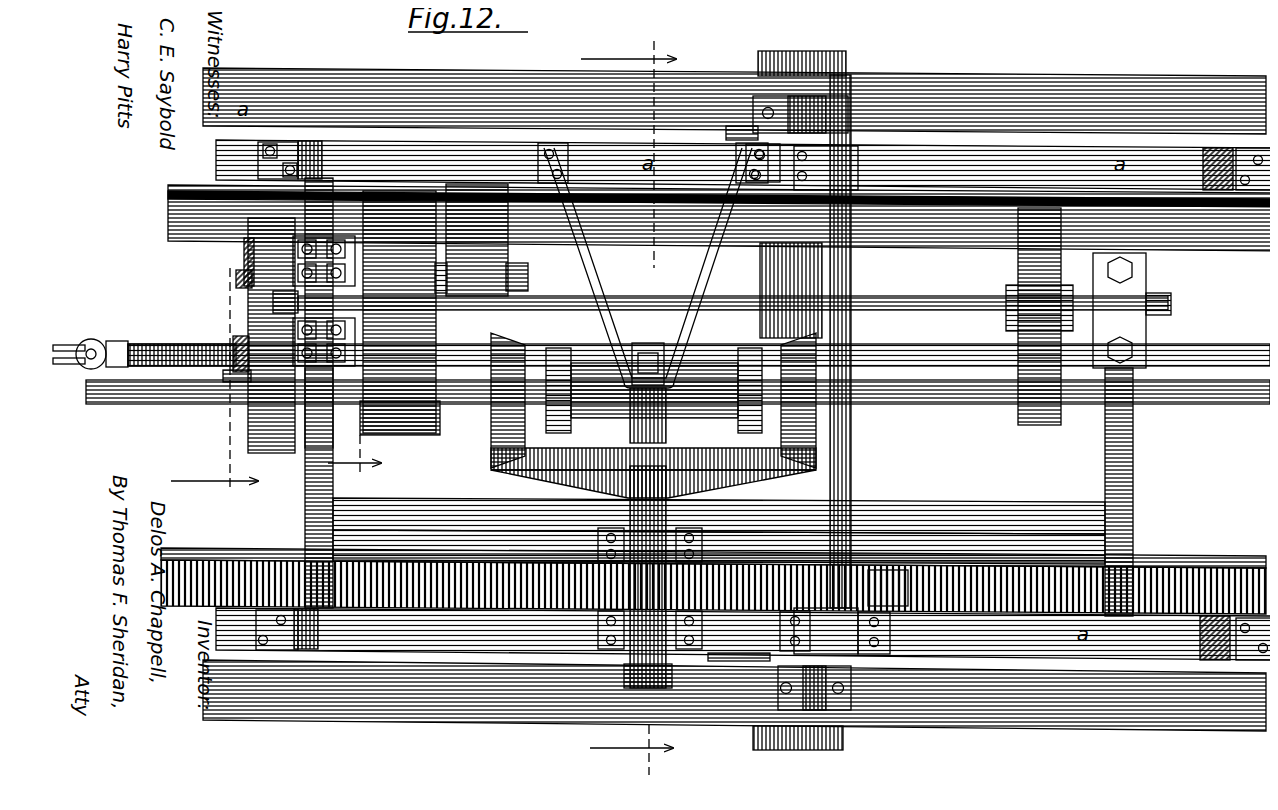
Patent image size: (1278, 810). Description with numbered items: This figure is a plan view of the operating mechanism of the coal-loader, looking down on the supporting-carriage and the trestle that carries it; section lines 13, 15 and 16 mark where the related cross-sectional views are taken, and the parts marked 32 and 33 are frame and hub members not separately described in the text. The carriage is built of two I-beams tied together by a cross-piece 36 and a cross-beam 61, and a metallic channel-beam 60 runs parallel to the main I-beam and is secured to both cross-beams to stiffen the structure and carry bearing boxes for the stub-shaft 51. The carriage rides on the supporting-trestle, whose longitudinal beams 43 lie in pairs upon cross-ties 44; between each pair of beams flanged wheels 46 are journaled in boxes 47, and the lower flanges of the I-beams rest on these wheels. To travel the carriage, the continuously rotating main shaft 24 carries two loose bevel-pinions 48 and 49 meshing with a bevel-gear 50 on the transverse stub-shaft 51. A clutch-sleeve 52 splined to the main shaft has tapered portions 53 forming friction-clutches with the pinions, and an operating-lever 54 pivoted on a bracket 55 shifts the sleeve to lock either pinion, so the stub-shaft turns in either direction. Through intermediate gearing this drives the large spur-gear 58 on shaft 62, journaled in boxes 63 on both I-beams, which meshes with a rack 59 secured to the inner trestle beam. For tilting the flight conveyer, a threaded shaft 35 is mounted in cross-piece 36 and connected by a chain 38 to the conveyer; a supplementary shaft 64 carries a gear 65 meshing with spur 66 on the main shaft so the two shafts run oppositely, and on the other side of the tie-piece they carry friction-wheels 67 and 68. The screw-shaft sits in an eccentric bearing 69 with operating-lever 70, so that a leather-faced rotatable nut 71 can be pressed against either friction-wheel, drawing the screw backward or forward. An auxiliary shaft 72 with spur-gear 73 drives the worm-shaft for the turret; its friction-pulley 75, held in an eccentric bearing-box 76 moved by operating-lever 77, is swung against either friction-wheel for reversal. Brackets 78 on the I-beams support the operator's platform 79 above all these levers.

The section line 13 is at (628, 398).
The section line 15 is at (214, 389).
The section line 16 is at (354, 462).
The main shaft 24 is at (118, 390).
The cross beam 32 is at (162, 208).
The hub 33 is at (740, 348).
The threaded shaft 35 is at (146, 340).
The cross-piece 36 is at (300, 496).
The chain 38 is at (75, 334).
The beams 43 is at (1185, 88).
The cross-ties 44 is at (775, 44).
The supporting flanged wheels 46 is at (745, 122).
The boxes 47 is at (820, 90).
The bevel-pinion 48 is at (495, 398).
The bevel-pinion 49 is at (800, 400).
The bevel-gear 50 is at (490, 456).
The stub-shaft 51 is at (630, 678).
The clutch-sleeve 52 is at (640, 345).
The tapered portions 53 is at (556, 345).
The operating-lever 54 is at (622, 400).
The bracket 55 is at (697, 300).
The spur-gear 58 is at (875, 580).
The rack 59 is at (490, 578).
The channel-beam 60 is at (968, 481).
The cross-beam 61 is at (1120, 472).
The shaft 62 is at (845, 274).
The boxes 63 is at (845, 140).
The supplementary shaft 64 is at (520, 270).
The gear 65 is at (240, 240).
The spur 66 is at (245, 420).
The friction-wheel 67 is at (452, 186).
The friction-wheel 68 is at (392, 427).
The eccentric bearing 69 is at (232, 376).
The operating-lever 70 is at (226, 338).
The rotatable nut 71 is at (319, 408).
The auxiliary shaft 72 is at (457, 303).
The spur-gear 73 is at (1032, 200).
The friction-pulley 75 is at (399, 312).
The eccentric bearing-box 76 is at (266, 292).
The operating-lever 77 is at (350, 266).
The brackets 78 is at (1200, 184).
The platform 79 is at (312, 142).